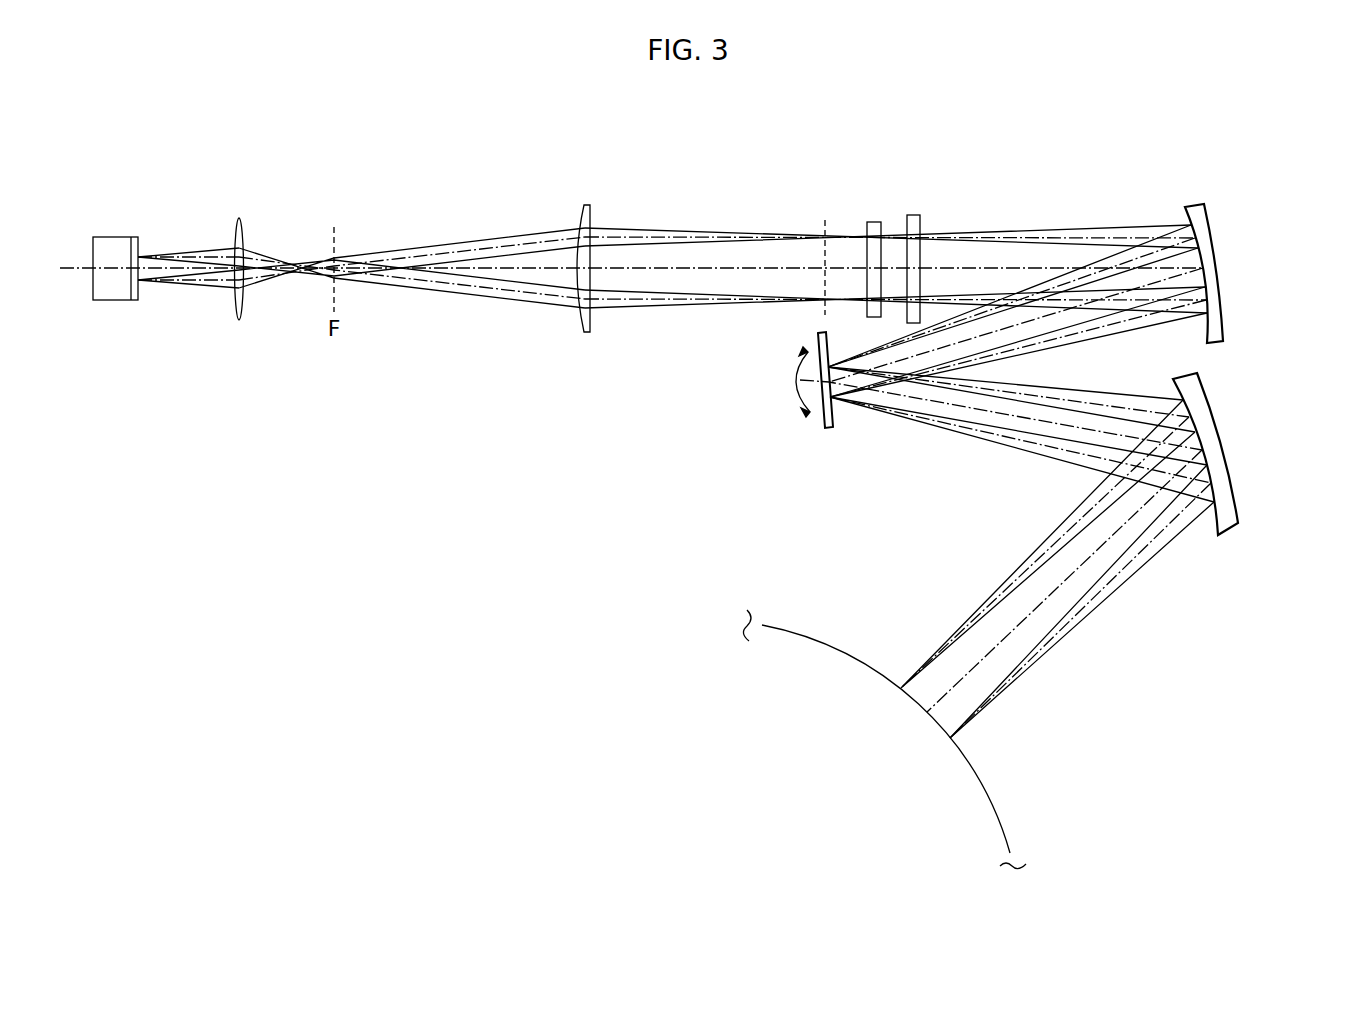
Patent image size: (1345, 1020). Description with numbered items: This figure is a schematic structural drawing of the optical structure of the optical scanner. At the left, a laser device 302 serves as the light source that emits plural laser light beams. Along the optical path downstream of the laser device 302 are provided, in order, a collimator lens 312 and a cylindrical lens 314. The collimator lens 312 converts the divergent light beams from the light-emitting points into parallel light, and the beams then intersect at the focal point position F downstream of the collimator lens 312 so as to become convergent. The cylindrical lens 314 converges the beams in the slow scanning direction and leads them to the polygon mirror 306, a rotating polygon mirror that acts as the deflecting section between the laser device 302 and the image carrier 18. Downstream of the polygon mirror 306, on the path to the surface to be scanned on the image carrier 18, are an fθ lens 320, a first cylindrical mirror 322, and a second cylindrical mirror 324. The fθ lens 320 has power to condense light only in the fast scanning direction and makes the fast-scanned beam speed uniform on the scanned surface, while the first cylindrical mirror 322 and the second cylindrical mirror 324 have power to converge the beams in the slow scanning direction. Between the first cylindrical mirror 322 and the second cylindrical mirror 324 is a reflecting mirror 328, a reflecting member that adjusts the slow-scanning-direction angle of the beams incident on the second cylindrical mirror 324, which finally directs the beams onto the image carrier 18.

The laser device 302 is at (112, 237).
The collimator lens 312 is at (243, 218).
The cylindrical lens 314 is at (578, 207).
The polygon mirror 306 is at (823, 222).
The fθ lens 320 is at (864, 209).
The first cylindrical mirror 322 is at (1210, 206).
The reflecting mirror 328 is at (829, 430).
The second cylindrical mirror 324 is at (1232, 480).
The image carrier 18 is at (987, 784).